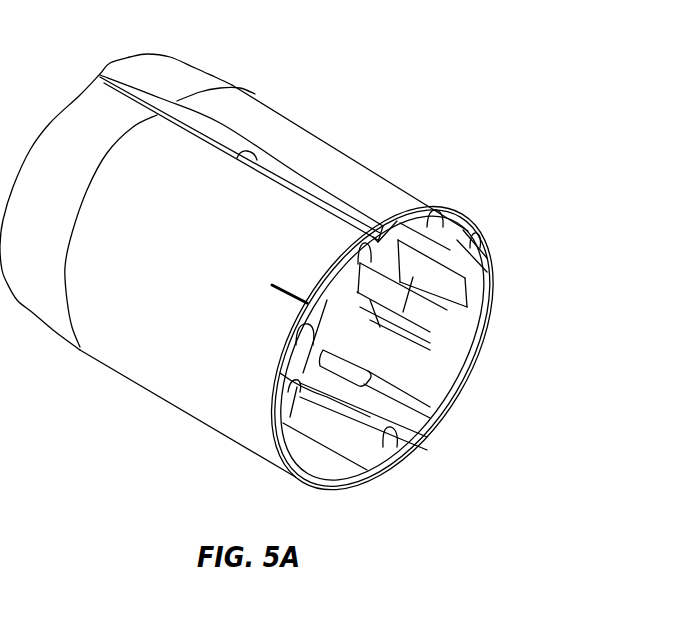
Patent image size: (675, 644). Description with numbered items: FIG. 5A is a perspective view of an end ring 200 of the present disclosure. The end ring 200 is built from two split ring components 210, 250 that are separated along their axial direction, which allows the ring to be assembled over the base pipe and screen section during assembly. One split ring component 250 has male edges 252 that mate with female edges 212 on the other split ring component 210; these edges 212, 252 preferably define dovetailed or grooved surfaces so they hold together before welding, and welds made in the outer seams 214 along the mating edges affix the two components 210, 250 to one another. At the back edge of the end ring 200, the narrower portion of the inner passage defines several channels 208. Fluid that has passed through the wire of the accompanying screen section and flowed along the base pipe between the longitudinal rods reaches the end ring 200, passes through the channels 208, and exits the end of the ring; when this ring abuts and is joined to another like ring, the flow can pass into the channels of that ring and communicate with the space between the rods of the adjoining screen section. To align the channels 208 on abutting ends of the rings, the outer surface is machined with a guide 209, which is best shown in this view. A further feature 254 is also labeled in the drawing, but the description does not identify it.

The end ring 200 is at (412, 108).
The channels 208 is at (487, 345).
The guide 209 is at (290, 293).
The split ring component 210 is at (305, 129).
The female edges 212 is at (398, 467).
The outer seams 214 is at (353, 205).
The split ring component 250 is at (173, 407).
The male edges 252 is at (392, 428).
The slot 254 is at (237, 158).